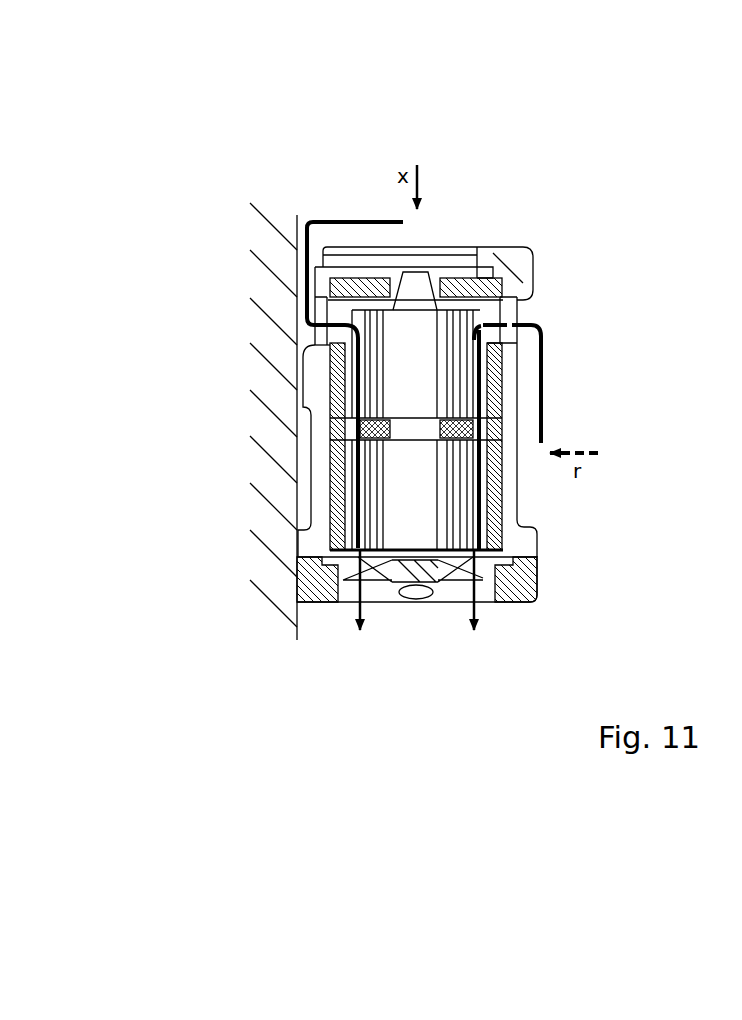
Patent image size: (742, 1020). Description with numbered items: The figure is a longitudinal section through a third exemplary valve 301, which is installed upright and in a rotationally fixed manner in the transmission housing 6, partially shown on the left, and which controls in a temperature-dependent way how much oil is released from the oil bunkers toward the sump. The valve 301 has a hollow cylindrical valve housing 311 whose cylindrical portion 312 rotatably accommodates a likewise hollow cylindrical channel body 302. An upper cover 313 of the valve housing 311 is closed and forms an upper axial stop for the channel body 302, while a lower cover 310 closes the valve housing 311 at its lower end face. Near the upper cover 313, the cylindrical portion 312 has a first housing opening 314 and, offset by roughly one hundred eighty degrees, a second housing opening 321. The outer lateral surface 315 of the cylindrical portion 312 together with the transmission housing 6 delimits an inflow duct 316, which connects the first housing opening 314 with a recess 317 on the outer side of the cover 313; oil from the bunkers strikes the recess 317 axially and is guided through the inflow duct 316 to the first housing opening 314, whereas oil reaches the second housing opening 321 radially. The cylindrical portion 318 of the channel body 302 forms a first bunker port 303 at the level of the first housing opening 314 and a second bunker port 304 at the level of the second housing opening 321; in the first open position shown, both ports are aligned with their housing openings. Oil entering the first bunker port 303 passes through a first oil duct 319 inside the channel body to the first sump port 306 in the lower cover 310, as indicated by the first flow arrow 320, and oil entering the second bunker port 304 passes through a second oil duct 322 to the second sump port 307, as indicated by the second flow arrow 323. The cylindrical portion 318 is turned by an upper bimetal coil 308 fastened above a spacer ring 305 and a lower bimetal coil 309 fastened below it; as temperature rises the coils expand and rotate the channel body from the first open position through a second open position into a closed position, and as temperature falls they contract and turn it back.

The transmission housing 6 is at (280, 228).
The valve 301 is at (525, 208).
The channel body 302 is at (460, 393).
The first bunker port 303 is at (300, 310).
The second bunker port 304 is at (488, 268).
The spacer ring 305 is at (480, 430).
The first sump port 306 is at (374, 582).
The second sump port 307 is at (462, 580).
The upper bimetal coil 308 is at (478, 397).
The lower bimetal coil 309 is at (460, 509).
The cover 310 is at (517, 587).
The valve housing 311 is at (551, 536).
The cylindrical portion 312 is at (308, 382).
The upper cover 313 is at (518, 264).
The first housing opening 314 is at (330, 345).
The outer lateral surface 315 is at (326, 326).
The inflow duct 316 is at (313, 316).
The recess 317 is at (453, 247).
The cylindrical portion 318 is at (340, 490).
The first oil duct 319 is at (345, 456).
The first flow arrow 320 is at (358, 219).
The second housing opening 321 is at (510, 318).
The second oil duct 322 is at (513, 512).
The second flow arrow 323 is at (543, 340).